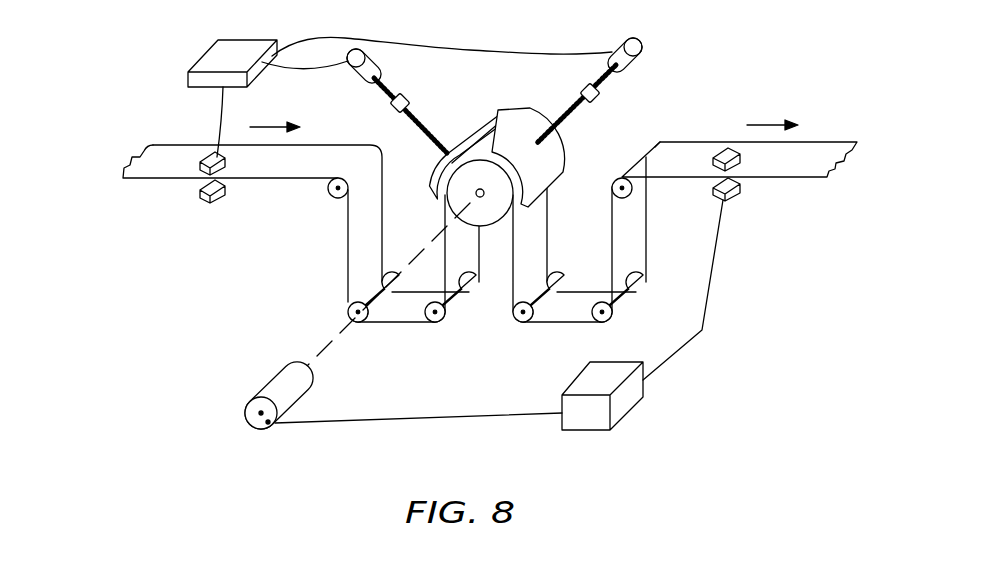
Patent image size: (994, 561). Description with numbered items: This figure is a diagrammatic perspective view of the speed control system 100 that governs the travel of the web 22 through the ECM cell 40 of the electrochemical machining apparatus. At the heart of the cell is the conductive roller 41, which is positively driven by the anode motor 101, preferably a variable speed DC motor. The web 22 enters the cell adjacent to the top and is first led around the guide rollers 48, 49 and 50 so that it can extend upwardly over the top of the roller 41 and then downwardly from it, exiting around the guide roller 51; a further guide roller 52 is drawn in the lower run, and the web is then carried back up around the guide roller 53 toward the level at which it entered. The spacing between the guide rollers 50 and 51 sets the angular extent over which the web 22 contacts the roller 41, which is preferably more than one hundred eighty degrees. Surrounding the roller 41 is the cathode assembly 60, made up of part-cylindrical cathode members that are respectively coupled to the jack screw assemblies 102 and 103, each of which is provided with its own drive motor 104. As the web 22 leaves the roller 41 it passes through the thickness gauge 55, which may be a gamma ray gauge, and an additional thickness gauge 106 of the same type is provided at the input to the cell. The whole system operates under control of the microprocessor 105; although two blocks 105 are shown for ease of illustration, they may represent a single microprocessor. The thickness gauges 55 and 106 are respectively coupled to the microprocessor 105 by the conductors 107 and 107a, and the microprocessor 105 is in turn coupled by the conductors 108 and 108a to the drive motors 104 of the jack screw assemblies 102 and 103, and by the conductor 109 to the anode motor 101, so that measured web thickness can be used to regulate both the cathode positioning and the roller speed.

The web 22 is at (292, 167).
The ECM cell 40 is at (514, 80).
The roller 41 is at (460, 197).
The guide roller 48 is at (333, 197).
The guide roller 49 is at (368, 293).
The guide roller 50 is at (423, 323).
The guide roller 51 is at (554, 270).
The roller 52 is at (588, 308).
The guide roller 53 is at (631, 188).
The thickness gauge 55 is at (740, 158).
The cathode assembly 60 is at (556, 104).
The speed control system 100 is at (623, 33).
The anode motor 101 is at (278, 385).
The jack screw assembly 102 is at (410, 126).
The jack screw assembly 103 is at (593, 114).
The drive motor 104 is at (385, 61).
The microprocessor 105 is at (222, 58).
The thickness gauge 106 is at (200, 172).
The conductor 107 is at (703, 331).
The conductor 107a is at (216, 119).
The conductor 108 is at (307, 72).
The conductor 108a is at (398, 34).
The conductor 109 is at (383, 420).